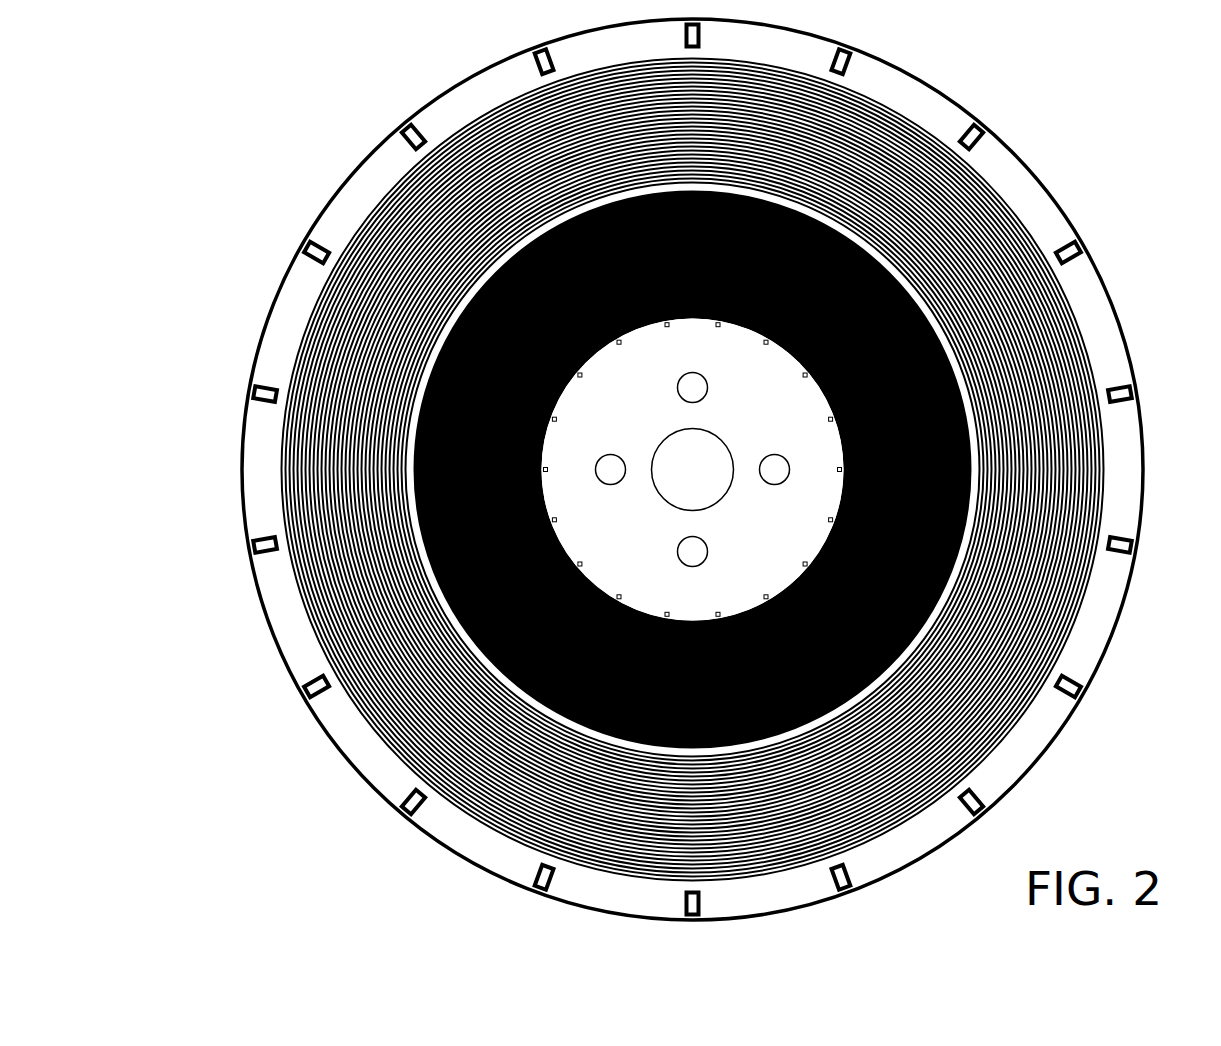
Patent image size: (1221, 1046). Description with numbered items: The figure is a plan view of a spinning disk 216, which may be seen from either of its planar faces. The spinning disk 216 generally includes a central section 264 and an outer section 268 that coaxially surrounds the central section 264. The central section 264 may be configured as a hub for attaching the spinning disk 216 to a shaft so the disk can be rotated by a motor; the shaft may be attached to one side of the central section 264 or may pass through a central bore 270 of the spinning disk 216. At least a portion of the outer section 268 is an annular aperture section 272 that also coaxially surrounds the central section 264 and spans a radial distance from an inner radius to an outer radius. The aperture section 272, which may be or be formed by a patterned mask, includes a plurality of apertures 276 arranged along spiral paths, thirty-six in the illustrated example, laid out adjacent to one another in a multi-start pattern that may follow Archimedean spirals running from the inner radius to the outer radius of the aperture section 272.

The spinning disk 216 is at (659, 466).
The central section 264 is at (602, 539).
The outer section 268 is at (1083, 662).
The central bore 270 is at (706, 427).
The aperture section 272 is at (936, 103).
The apertures 276 is at (1073, 322).